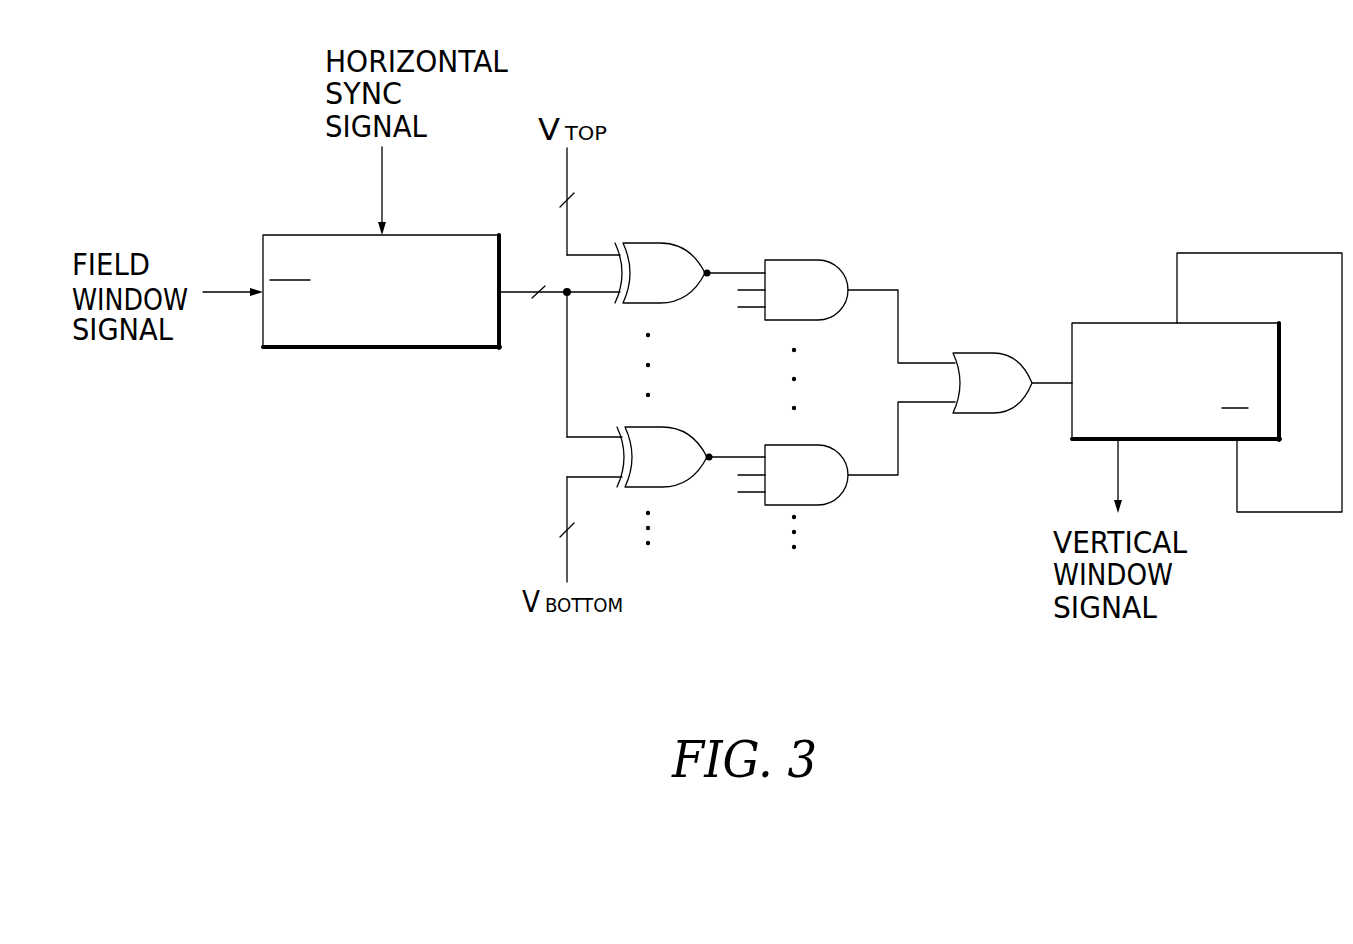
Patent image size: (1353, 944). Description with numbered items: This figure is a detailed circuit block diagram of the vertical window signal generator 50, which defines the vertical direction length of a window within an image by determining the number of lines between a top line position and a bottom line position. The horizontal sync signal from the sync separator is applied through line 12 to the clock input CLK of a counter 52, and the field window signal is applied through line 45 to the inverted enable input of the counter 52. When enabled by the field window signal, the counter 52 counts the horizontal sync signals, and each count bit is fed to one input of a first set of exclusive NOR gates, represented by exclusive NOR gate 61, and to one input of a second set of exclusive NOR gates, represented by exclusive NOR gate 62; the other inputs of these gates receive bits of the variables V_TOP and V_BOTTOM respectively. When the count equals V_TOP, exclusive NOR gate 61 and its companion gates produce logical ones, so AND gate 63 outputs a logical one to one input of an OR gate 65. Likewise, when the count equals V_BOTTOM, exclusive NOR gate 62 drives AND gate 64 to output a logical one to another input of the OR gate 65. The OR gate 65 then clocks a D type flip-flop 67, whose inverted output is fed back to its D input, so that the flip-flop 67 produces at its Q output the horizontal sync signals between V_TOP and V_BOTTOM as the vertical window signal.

The line 12 is at (381, 195).
The line 45 is at (236, 294).
The vertical window signal generator 50 is at (1070, 121).
The counter 52 is at (478, 349).
The exclusive NOR gate 61 is at (680, 245).
The exclusive NOR gate 62 is at (686, 431).
The AND gate 63 is at (833, 262).
The AND gate 64 is at (837, 448).
The OR gate 65 is at (990, 353).
The D type flip-flop 67 is at (1110, 323).